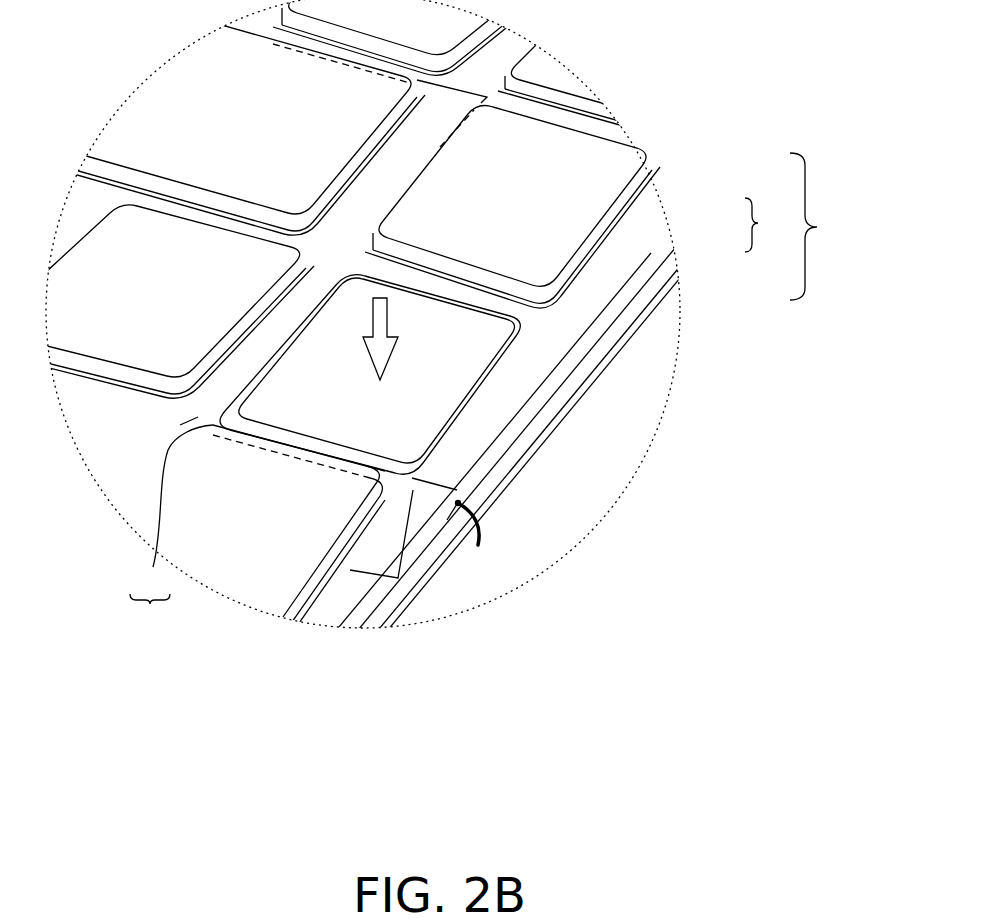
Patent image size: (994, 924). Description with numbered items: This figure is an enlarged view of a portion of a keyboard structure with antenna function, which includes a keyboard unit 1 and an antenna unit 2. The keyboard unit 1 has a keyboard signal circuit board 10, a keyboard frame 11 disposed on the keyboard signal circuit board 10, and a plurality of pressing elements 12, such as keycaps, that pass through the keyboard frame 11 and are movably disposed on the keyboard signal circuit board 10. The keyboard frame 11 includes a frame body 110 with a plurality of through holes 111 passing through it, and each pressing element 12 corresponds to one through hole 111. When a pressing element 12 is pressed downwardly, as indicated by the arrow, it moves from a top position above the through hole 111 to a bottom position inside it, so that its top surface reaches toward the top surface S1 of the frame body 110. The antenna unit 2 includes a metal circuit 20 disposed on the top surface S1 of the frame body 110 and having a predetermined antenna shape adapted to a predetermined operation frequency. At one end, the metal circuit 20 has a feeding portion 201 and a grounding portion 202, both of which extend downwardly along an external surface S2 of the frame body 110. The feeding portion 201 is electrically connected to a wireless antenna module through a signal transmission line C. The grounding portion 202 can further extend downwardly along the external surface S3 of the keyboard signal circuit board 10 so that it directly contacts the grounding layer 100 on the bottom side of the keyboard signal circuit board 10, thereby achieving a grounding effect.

The keyboard unit 1 is at (814, 226).
The keyboard signal circuit board 10 is at (645, 295).
The grounding layer 100 is at (632, 335).
The keyboard frame 11 is at (764, 225).
The frame body 110 is at (653, 257).
The through hole 111 is at (628, 217).
The pressing element 12 is at (572, 162).
The top surface S1 is at (508, 380).
The external surface S2 is at (493, 453).
The external surface S3 is at (540, 420).
The signal transmission line C is at (483, 533).
The antenna unit 2 is at (150, 614).
The metal circuit 20 is at (173, 511).
The feeding portion 201 is at (447, 520).
The grounding portion 202 is at (393, 597).